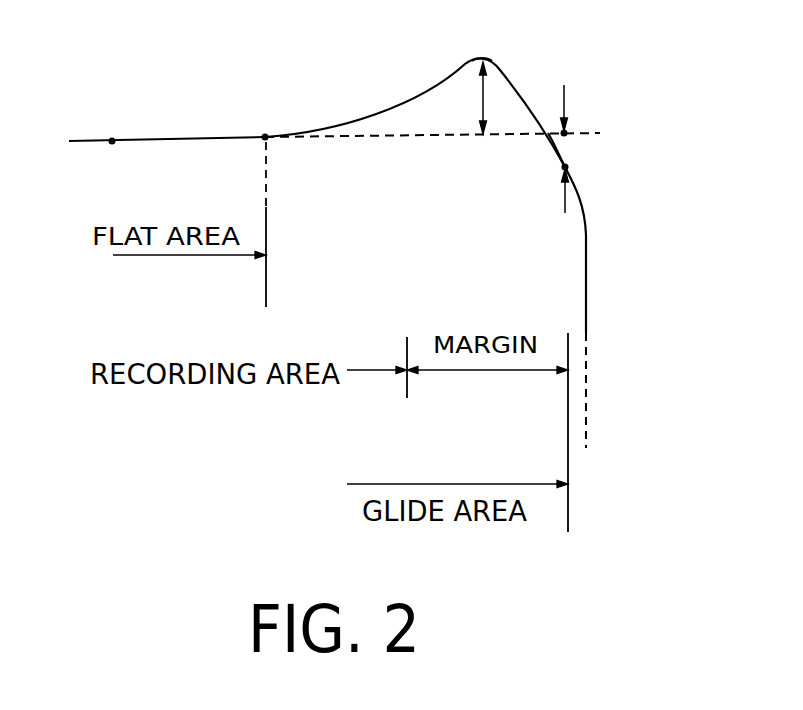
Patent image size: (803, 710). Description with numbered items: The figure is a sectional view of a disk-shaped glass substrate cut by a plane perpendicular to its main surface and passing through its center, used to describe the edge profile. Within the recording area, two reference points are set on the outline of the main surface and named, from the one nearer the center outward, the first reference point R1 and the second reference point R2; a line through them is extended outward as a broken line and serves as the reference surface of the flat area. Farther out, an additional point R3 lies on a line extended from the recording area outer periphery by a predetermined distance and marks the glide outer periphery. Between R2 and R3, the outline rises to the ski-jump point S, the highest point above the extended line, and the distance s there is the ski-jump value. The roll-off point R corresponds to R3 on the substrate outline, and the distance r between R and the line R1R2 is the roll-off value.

The first reference point R1 is at (111, 125).
The second reference point R2 is at (259, 119).
The additional point R3 is at (564, 133).
The roll-off point R is at (565, 167).
The ski-jump point S is at (481, 42).
The ski-jump value s is at (494, 98).
The roll-off value r is at (568, 148).